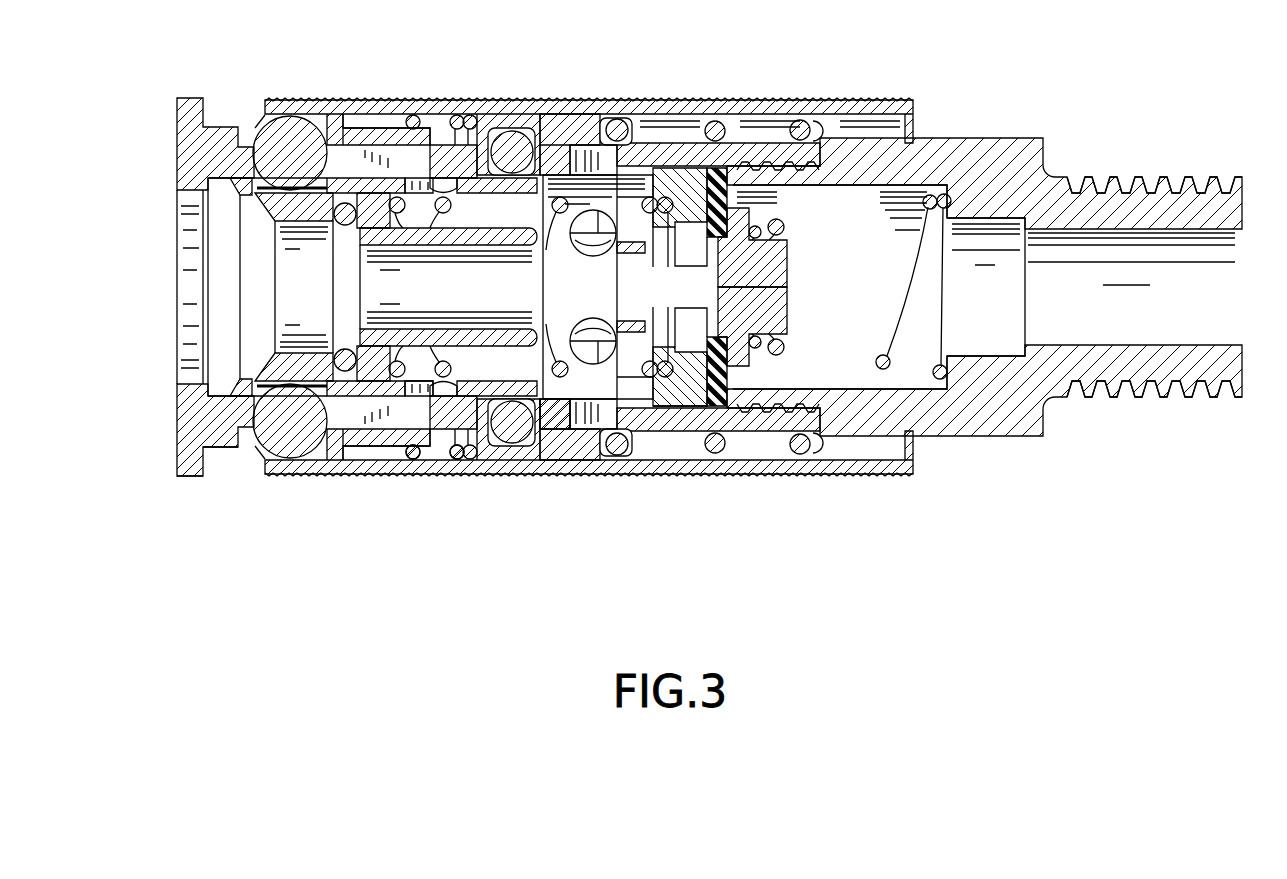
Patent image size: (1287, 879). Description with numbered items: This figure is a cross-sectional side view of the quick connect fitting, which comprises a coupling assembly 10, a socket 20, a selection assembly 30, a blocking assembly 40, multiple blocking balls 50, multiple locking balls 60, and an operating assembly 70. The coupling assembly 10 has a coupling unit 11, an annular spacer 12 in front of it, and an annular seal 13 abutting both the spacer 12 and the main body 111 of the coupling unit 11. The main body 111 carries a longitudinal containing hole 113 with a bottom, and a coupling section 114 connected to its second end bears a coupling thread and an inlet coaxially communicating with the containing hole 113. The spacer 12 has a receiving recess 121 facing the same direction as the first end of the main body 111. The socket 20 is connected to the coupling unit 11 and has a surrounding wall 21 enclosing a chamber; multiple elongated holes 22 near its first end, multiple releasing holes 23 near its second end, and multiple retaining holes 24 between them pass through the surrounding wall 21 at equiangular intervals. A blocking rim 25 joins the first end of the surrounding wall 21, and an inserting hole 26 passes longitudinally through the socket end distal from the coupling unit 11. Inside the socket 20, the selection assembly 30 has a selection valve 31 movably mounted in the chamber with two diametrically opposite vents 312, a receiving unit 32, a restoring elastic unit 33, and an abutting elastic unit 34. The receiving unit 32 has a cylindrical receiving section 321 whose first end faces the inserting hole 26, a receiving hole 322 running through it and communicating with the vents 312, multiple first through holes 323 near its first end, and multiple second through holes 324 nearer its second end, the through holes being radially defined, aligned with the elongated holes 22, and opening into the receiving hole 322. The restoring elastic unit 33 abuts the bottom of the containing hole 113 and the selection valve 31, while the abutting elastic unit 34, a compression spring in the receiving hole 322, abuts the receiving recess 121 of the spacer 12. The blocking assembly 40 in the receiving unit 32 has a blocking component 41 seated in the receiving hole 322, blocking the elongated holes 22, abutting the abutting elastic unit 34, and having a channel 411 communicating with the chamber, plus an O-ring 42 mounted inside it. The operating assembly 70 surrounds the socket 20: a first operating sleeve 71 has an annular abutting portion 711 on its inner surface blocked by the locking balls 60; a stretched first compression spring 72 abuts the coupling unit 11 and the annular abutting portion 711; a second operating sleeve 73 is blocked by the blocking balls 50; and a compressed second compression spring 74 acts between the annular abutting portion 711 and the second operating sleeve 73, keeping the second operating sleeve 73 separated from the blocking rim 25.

The coupling assembly 10 is at (1129, 103).
The coupling unit 11 is at (1020, 124).
The main body 111 is at (958, 140).
The containing hole 113 is at (819, 303).
The coupling section 114 is at (1182, 185).
The spacer 12 is at (665, 400).
The receiving recess 121 is at (645, 410).
The seal 13 is at (718, 402).
The socket 20 is at (151, 143).
The surrounding wall 21 is at (556, 428).
The elongated holes 22 is at (398, 428).
The releasing holes 23 is at (582, 160).
The retaining holes 24 is at (521, 438).
The blocking rim 25 is at (197, 430).
The inserting hole 26 is at (197, 380).
The selection assembly 30 is at (794, 216).
The selection valve 31 is at (786, 357).
The vents 312 is at (695, 275).
The receiving unit 32 is at (224, 210).
The receiving section 321 is at (357, 187).
The receiving hole 322 is at (487, 180).
The first through holes 323 is at (259, 190).
The second through holes 324 is at (437, 178).
The restoring elastic unit 33 is at (915, 300).
The abutting elastic unit 34 is at (447, 212).
The blocking assembly 40 is at (477, 371).
The blocking component 41 is at (267, 345).
The channel 411 is at (405, 240).
The O-ring 42 is at (345, 228).
The blocking balls 50 is at (262, 140).
The locking balls 60 is at (512, 132).
The operating assembly 70 is at (781, 79).
The first operating sleeve 71 is at (707, 110).
The annular abutting portion 711 is at (555, 140).
The first compression spring 72 is at (630, 132).
The second operating sleeve 73 is at (288, 473).
The second compression spring 74 is at (430, 458).